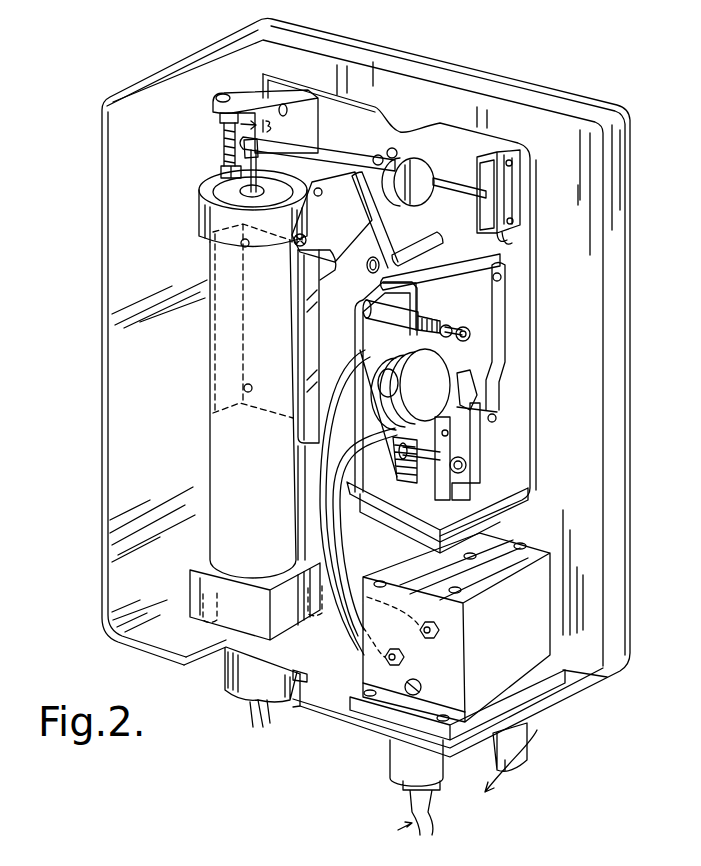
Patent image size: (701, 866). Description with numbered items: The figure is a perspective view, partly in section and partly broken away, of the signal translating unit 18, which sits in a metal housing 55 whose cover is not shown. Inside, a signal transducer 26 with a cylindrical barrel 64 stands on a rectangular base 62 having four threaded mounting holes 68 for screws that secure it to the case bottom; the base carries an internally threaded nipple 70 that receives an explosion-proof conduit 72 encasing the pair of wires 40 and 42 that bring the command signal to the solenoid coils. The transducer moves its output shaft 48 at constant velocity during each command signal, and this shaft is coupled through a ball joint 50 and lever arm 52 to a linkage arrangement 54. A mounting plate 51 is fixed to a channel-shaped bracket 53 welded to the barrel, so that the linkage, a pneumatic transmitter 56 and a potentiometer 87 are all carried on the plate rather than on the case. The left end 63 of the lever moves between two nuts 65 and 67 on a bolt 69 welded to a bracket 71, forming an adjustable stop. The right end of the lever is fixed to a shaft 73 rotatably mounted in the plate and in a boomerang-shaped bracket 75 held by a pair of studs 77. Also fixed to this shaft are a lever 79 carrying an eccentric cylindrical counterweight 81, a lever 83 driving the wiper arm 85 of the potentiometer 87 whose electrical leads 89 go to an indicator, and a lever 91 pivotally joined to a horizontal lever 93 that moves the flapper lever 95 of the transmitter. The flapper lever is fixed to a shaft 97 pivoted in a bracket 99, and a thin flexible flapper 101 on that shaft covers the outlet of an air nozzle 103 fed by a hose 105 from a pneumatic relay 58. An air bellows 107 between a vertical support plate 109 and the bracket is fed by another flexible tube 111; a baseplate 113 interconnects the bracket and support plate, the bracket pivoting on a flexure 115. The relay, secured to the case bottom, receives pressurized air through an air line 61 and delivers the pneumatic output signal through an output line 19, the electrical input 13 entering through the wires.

The electrical input 13 is at (244, 769).
The signal translating unit 18 is at (636, 150).
The output line 19 is at (500, 747).
The signal transducer 26 is at (157, 332).
The wire 40 is at (253, 705).
The wire 42 is at (273, 712).
The output shaft 48 is at (201, 217).
The ball joint 50 is at (258, 145).
The mounting plate 51 is at (322, 85).
The lever arm 52 is at (318, 158).
The channel-shaped bracket 53 is at (303, 315).
The linkage arrangement 54 is at (448, 240).
The housing 55 is at (488, 77).
The pneumatic transmitter 56 is at (452, 409).
The pneumatic relay 58 is at (517, 646).
The air line 61 is at (412, 812).
The base 62 is at (200, 550).
The left end of lever 63 is at (220, 164).
The cylindrical barrel 64 is at (210, 443).
The nut 65 is at (218, 116).
The nut 67 is at (230, 180).
The threaded mounting holes 68 is at (182, 607).
The bolt 69 is at (222, 140).
The internally threaded nipple 70 is at (262, 684).
The bracket 71 is at (247, 92).
The explosion-proof conduit 72 is at (220, 663).
The shaft 73 is at (383, 158).
The boomerang-shaped bracket 75 is at (358, 253).
The studs 77 is at (437, 230).
The lever 79 is at (353, 187).
The cylindrical counterweight 81 is at (423, 163).
The lever 83 is at (447, 190).
The wiper arm 85 is at (490, 190).
The potentiometer 87 is at (517, 187).
The electrical leads 89 is at (508, 237).
The lever 91 is at (364, 223).
The horizontal lever 93 is at (450, 275).
The flapper lever 95 is at (510, 350).
The shaft 97 is at (497, 416).
The bracket 99 is at (437, 473).
The flapper 101 is at (487, 437).
The air nozzle 103 is at (455, 490).
The hose 105 is at (320, 463).
The air bellows 107 is at (406, 420).
The vertical support plate 109 is at (358, 323).
The flexible tube 111 is at (392, 348).
The baseplate 113 is at (385, 502).
The flexure 115 is at (432, 505).